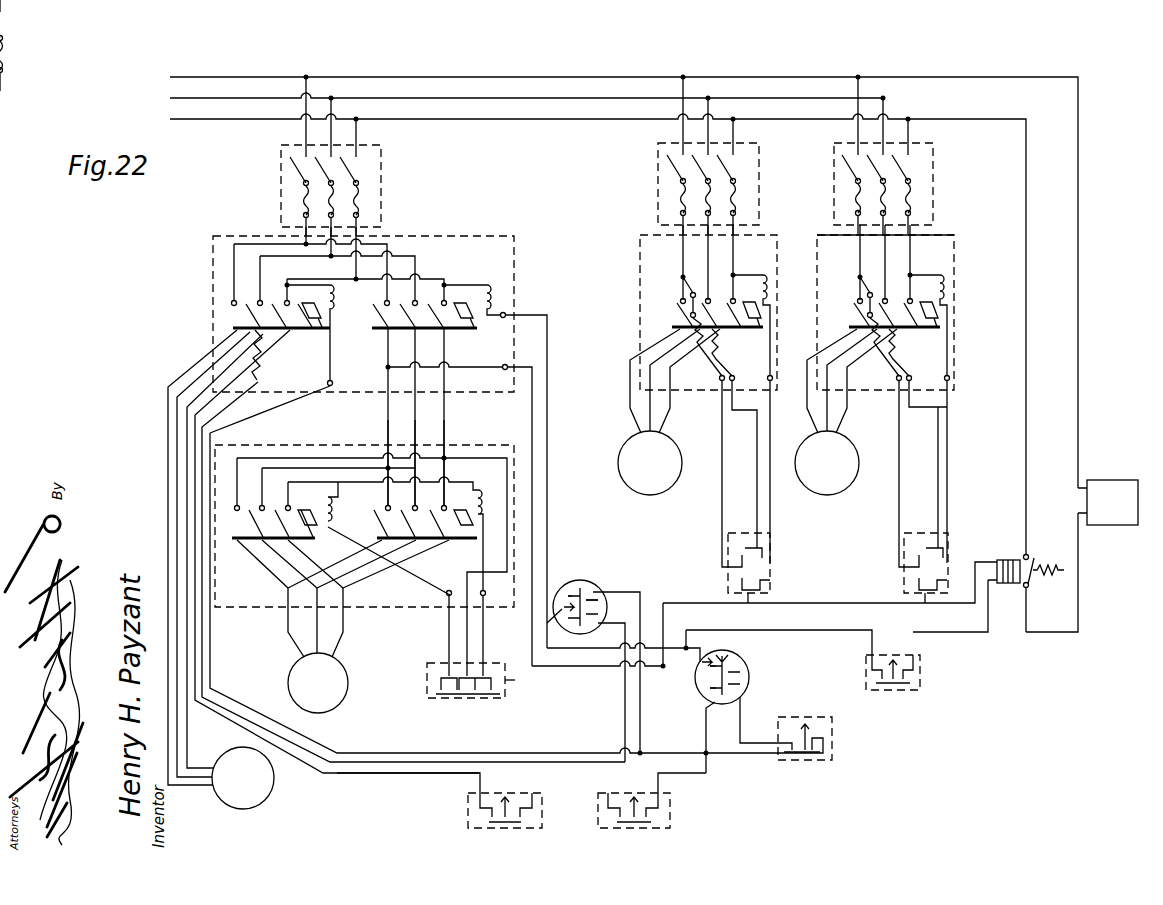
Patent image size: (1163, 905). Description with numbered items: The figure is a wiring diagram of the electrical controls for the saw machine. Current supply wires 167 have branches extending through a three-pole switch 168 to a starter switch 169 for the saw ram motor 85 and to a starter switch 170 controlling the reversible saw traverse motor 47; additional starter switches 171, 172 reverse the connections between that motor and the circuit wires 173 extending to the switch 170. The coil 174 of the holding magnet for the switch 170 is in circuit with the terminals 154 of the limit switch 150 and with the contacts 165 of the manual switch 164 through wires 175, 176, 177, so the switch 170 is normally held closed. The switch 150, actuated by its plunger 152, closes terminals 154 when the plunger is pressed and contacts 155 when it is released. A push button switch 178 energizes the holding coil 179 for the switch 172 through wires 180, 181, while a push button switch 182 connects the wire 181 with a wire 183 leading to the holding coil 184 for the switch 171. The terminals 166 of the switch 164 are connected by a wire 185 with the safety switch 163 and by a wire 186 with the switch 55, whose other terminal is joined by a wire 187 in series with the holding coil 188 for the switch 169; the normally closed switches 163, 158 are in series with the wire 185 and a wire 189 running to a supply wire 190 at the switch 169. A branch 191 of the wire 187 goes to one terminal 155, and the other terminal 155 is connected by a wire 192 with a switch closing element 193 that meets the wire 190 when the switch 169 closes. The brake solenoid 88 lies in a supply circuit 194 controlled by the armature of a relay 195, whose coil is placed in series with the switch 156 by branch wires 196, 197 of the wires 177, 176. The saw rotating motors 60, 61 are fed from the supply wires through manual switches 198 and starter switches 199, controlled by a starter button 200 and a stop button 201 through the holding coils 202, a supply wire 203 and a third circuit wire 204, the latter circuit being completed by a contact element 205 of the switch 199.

The saw traverse motor 47 is at (340, 705).
The switch 55 is at (822, 760).
The saw rotating motor 60 is at (670, 488).
The saw rotating motor 61 is at (847, 488).
The saw ram motor 85 is at (262, 802).
The brake solenoid 88 is at (1110, 525).
The limit switch 150 is at (582, 580).
The actuating button or plunger 152 is at (553, 615).
The pair of terminals 154 is at (570, 582).
The pair of contacts 155 is at (598, 595).
The switch 156 is at (895, 690).
The normally closed switch 158 is at (468, 805).
The safety switch 163 is at (670, 812).
The manually operable switch 164 is at (776, 676).
The pair of contacts 165 is at (710, 680).
The terminals 166 is at (715, 694).
The current supply wires 167 is at (490, 100).
The three-pole switch 168 is at (281, 183).
The starter switch 169 is at (232, 328).
The starter switch 170 is at (465, 330).
The starter switch 171 is at (237, 545).
The starter switch 172 is at (440, 540).
The circuit wires 173 is at (395, 410).
The coil of the holding magnet 174 is at (495, 290).
The wire 175 is at (547, 352).
The wire 176 is at (606, 630).
The wire 177 is at (560, 668).
The push button switch 178 is at (470, 698).
The holding coil 179 is at (480, 490).
The wire 180 is at (505, 680).
The wire 181 is at (448, 632).
The push button switch 182 is at (427, 666).
The wire 183 is at (430, 582).
The holding coil 184 is at (360, 498).
The wire 185 is at (706, 770).
The wire 186 is at (742, 706).
The wire 187 is at (398, 764).
The holding coil 188 is at (334, 316).
The wire 189 is at (395, 778).
The current supply wire 190 is at (234, 244).
The branch 191 is at (640, 600).
The wire 192 is at (625, 704).
The switch closing element 193 is at (234, 292).
The current supply circuit 194 is at (1055, 405).
The relay 195 is at (1008, 560).
The branch circuit wire 196 is at (822, 603).
The branch circuit wire 197 is at (870, 622).
The manually operable switches 198 is at (834, 184).
The starter switches 199 is at (762, 236).
The starter button 200 is at (909, 520).
The stop button 201 is at (862, 600).
The holding coils 202 is at (968, 262).
The supply wire 203 is at (950, 402).
The third circuit wire 204 is at (889, 420).
The contact element 205 is at (732, 444).